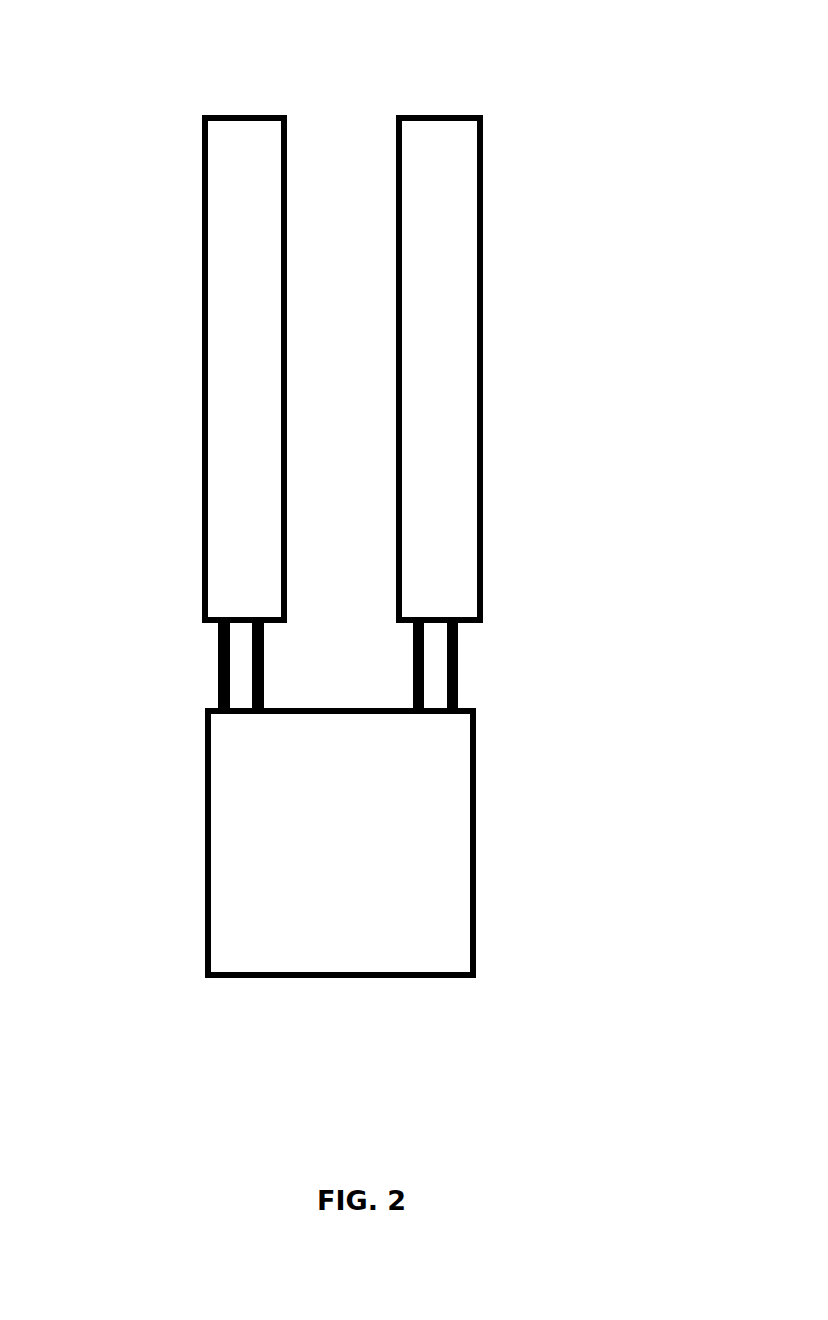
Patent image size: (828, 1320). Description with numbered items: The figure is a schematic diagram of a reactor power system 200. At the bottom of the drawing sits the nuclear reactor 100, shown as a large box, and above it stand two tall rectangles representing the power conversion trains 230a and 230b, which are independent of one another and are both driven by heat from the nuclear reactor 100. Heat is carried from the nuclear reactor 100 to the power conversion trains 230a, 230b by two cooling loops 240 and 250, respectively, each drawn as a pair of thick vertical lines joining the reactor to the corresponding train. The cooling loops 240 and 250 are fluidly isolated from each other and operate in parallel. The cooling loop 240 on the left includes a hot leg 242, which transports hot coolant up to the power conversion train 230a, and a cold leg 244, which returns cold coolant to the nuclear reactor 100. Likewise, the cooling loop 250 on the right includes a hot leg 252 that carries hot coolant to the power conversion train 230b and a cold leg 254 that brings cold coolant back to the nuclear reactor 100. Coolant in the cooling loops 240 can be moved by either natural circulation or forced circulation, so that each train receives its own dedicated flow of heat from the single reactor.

The reactor power system 200 is at (563, 87).
The nuclear reactor 100 is at (205, 868).
The power conversion train 230a is at (203, 230).
The power conversion train 230b is at (482, 230).
The cooling loop 240 is at (226, 654).
The hot leg 242 is at (218, 680).
The cold leg 244 is at (264, 652).
The cooling loop 250 is at (457, 654).
The hot leg 252 is at (459, 678).
The cold leg 254 is at (413, 650).